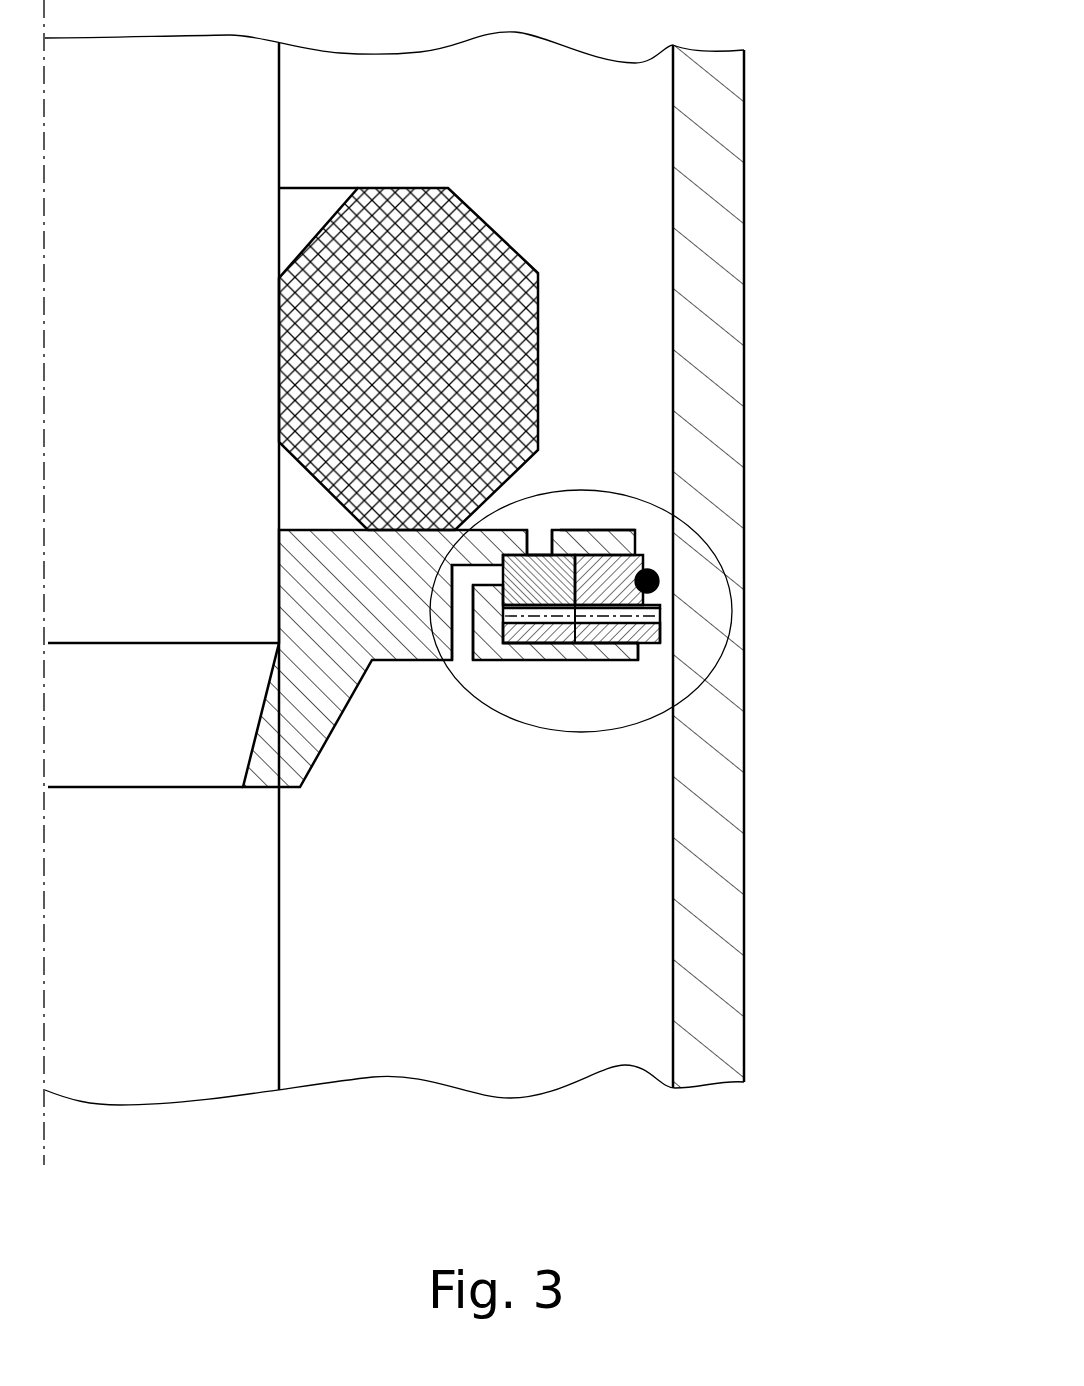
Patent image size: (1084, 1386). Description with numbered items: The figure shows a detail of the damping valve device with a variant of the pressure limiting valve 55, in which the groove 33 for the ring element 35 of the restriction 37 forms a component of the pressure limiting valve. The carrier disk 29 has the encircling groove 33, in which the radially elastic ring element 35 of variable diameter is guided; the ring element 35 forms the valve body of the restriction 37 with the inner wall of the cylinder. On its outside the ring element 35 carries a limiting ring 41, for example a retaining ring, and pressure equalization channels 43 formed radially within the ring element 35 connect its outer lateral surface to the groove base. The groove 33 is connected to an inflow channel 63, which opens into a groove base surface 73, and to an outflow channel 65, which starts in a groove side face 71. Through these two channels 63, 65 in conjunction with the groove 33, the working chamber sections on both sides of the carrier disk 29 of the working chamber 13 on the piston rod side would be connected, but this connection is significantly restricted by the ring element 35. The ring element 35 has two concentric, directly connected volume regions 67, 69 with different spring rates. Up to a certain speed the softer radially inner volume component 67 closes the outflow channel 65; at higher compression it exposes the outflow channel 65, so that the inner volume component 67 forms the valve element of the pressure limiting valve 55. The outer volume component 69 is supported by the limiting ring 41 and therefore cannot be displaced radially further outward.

The working chamber 13 is at (550, 134).
The carrier disk 29 is at (389, 597).
The encircling groove 33 is at (592, 652).
The ring element 35 is at (652, 656).
The restriction 37 is at (628, 493).
The limiting ring 41 is at (660, 580).
The pressure equalization channels 43 is at (647, 612).
The pressure limiting valve 55 is at (534, 780).
The inflow channel 63 is at (462, 640).
The outflow channel 65 is at (538, 542).
The radially inner volume component 67 is at (515, 568).
The outer volume component 69 is at (608, 568).
The groove side face 71 is at (660, 598).
The groove base surface 73 is at (657, 635).